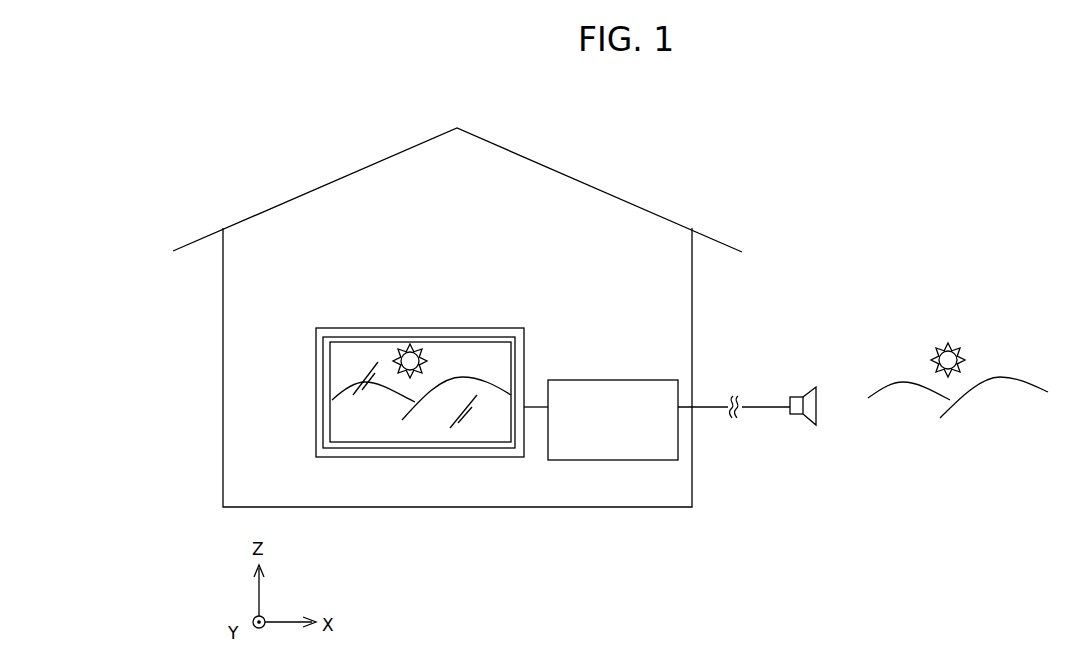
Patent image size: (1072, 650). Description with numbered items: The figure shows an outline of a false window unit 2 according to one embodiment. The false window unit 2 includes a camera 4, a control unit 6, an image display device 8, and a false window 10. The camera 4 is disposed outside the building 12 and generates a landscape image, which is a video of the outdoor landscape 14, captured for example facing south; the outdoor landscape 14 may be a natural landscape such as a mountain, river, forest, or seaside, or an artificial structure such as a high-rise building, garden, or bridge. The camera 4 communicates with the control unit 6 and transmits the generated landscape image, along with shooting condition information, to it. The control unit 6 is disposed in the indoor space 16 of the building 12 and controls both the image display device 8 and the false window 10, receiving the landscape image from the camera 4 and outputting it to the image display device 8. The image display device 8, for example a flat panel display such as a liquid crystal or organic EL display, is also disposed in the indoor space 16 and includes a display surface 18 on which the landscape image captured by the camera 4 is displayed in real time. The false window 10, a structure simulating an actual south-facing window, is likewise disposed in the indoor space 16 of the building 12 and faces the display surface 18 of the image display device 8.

The false window unit 2 is at (554, 314).
The camera 4 is at (797, 393).
The control unit 6 is at (580, 380).
The image display device 8 is at (343, 353).
The false window 10 is at (312, 421).
The building 12 is at (638, 208).
The outdoor landscape 14 is at (1003, 320).
The indoor space 16 is at (268, 345).
The display surface 18 is at (460, 352).